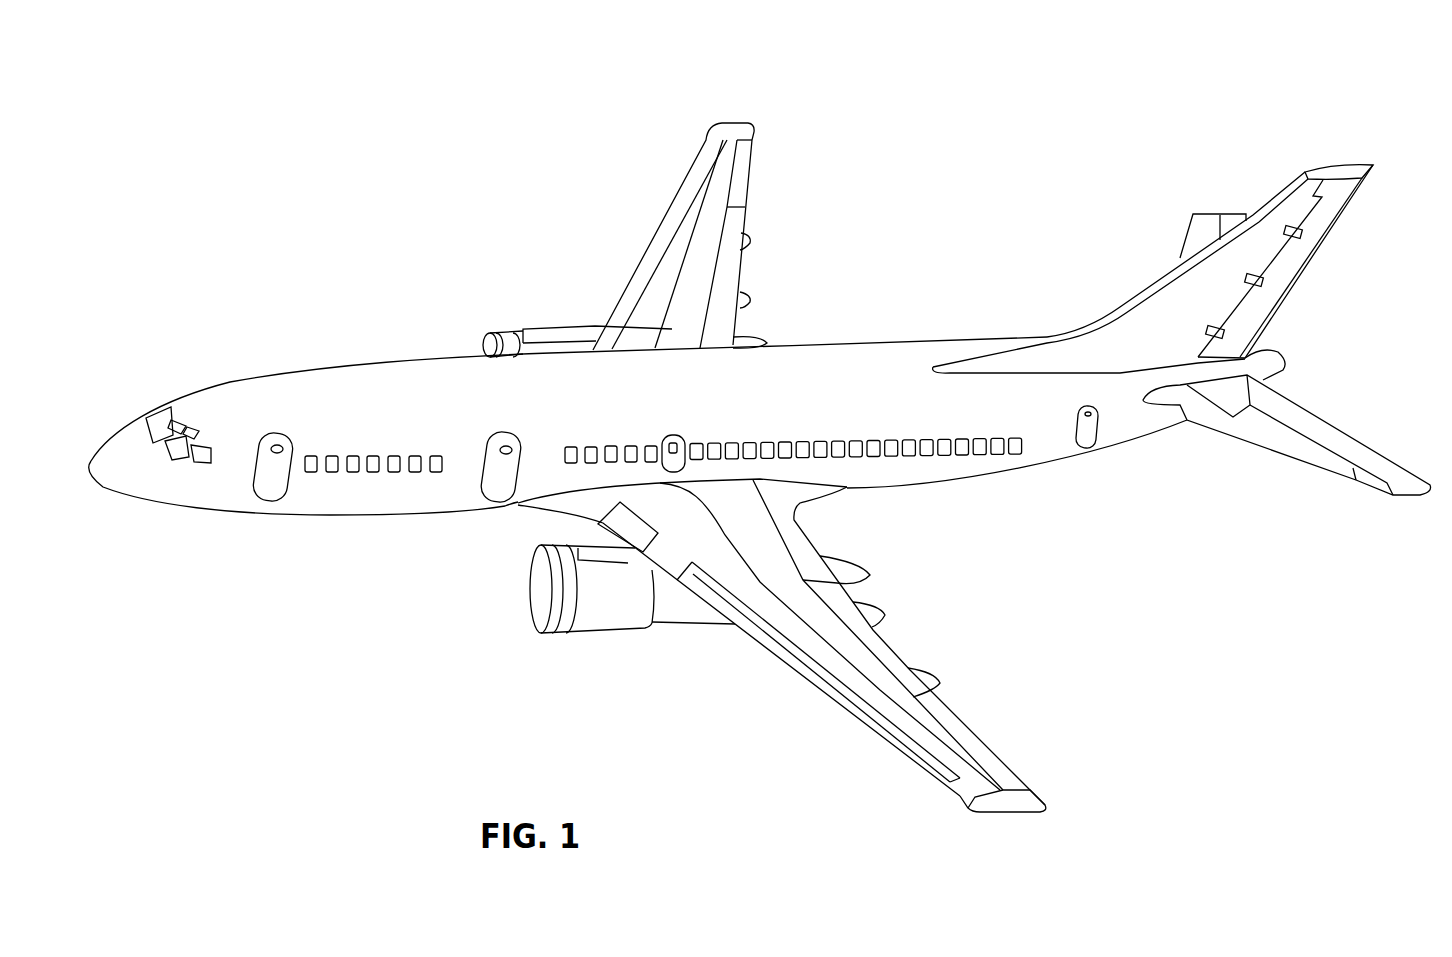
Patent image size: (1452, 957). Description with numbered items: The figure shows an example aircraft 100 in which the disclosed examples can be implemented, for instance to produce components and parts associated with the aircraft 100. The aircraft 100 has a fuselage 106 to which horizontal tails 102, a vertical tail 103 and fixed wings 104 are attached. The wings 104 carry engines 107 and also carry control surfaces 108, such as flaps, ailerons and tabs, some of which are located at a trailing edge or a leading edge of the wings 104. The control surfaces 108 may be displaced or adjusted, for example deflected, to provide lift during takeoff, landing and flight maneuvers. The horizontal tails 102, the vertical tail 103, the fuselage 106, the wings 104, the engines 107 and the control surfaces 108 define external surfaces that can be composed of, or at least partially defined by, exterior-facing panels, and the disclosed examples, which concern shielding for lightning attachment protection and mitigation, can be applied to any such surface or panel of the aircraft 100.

The aircraft 100 is at (364, 124).
The horizontal tails 102 is at (1208, 232).
The vertical tail 103 is at (1298, 197).
The wings 104 is at (664, 221).
The fuselage 106 is at (213, 400).
The engines 107 is at (538, 335).
The control surfaces 108 is at (728, 256).